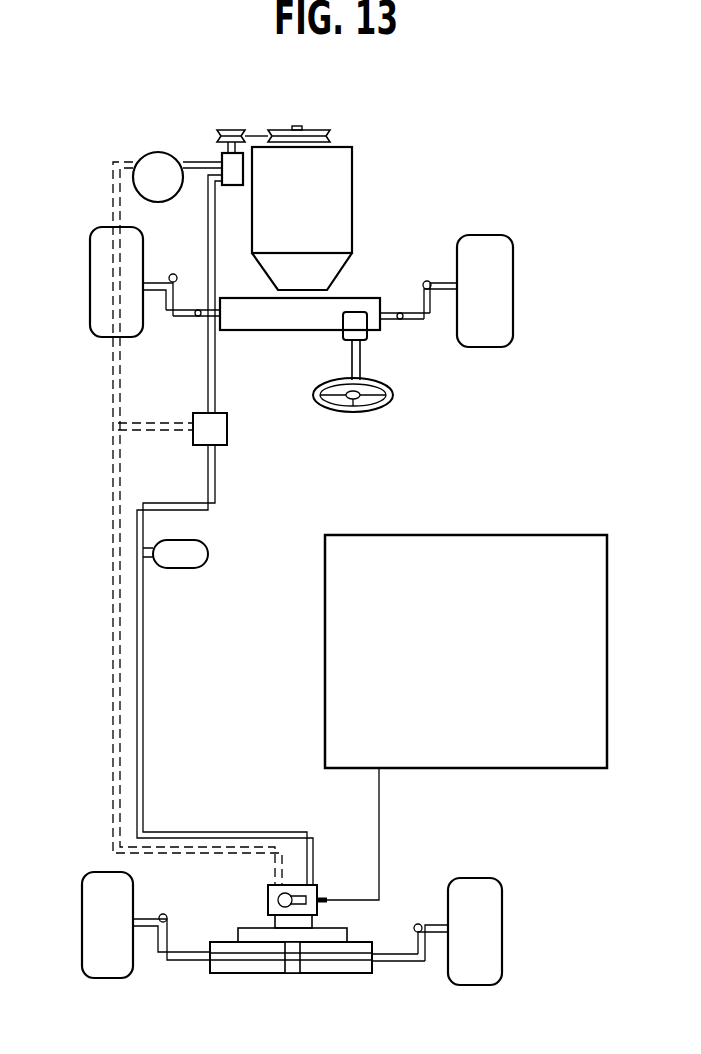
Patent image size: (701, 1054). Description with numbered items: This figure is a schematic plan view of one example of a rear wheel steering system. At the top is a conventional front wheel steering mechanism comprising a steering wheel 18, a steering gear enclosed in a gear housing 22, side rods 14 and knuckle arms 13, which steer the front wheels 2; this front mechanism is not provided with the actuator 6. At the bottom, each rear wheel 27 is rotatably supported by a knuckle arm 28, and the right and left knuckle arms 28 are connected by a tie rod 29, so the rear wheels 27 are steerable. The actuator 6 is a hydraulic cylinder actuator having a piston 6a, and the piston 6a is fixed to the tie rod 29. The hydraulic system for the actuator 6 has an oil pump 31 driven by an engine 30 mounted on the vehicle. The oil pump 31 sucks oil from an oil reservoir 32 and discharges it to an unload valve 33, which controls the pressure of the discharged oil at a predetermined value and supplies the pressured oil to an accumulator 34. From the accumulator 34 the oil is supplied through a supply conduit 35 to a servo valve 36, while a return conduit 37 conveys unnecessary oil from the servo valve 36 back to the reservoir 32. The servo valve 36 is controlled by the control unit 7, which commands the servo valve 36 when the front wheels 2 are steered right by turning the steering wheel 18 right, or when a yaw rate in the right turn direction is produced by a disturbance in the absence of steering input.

The front wheels 2 is at (93, 237).
The actuator 6 is at (333, 976).
The piston 6a is at (293, 972).
The control unit 7 is at (576, 535).
The knuckle arms 13 is at (163, 300).
The side rods 14 is at (190, 322).
The steering wheel 18 is at (377, 410).
The gear housing 22 is at (260, 322).
The rear wheels 27 is at (112, 980).
The knuckle arms 28 is at (157, 948).
The tie rod 29 is at (405, 965).
The engine 30 is at (353, 172).
The oil pump 31 is at (217, 155).
The oil reservoir 32 is at (157, 152).
The unload valve 33 is at (228, 432).
The accumulator 34 is at (209, 553).
The supply conduit 35 is at (143, 655).
The servo valve 36 is at (268, 902).
The return conduit 37 is at (112, 660).